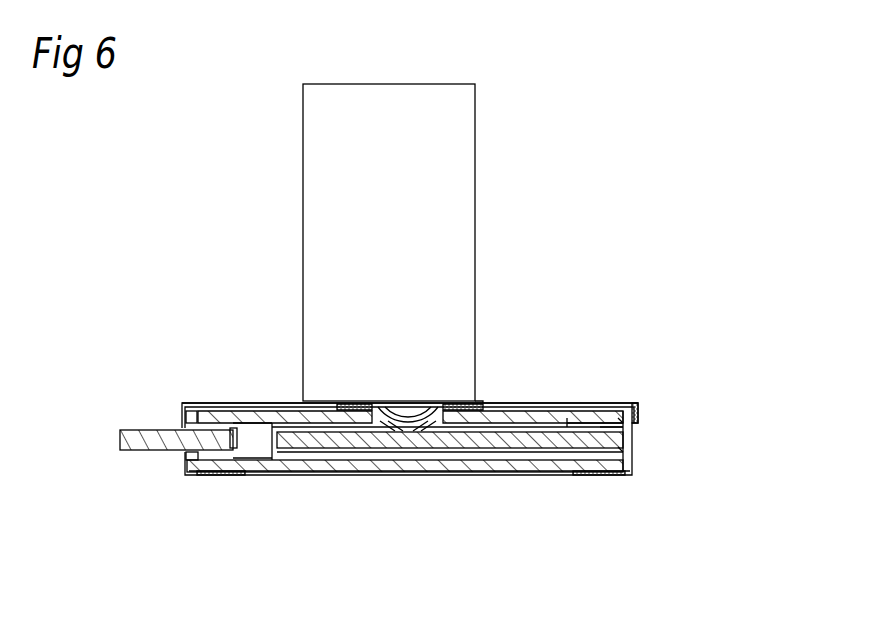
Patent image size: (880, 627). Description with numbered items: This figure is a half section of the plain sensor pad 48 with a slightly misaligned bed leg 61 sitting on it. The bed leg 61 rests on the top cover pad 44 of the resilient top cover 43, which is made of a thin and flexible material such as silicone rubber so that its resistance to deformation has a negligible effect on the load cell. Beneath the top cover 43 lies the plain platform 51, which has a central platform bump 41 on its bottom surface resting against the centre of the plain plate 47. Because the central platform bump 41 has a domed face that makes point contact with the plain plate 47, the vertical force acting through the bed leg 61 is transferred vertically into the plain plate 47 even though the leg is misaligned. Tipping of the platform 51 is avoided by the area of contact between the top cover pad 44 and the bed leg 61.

The central platform bump 41 is at (388, 420).
The resilient top cover 43 is at (619, 400).
The top cover pad 44 is at (483, 401).
The plain plate 47 is at (497, 440).
The plain sensor pad 48 is at (655, 410).
The plain platform 51 is at (603, 428).
The bed leg 61 is at (447, 207).